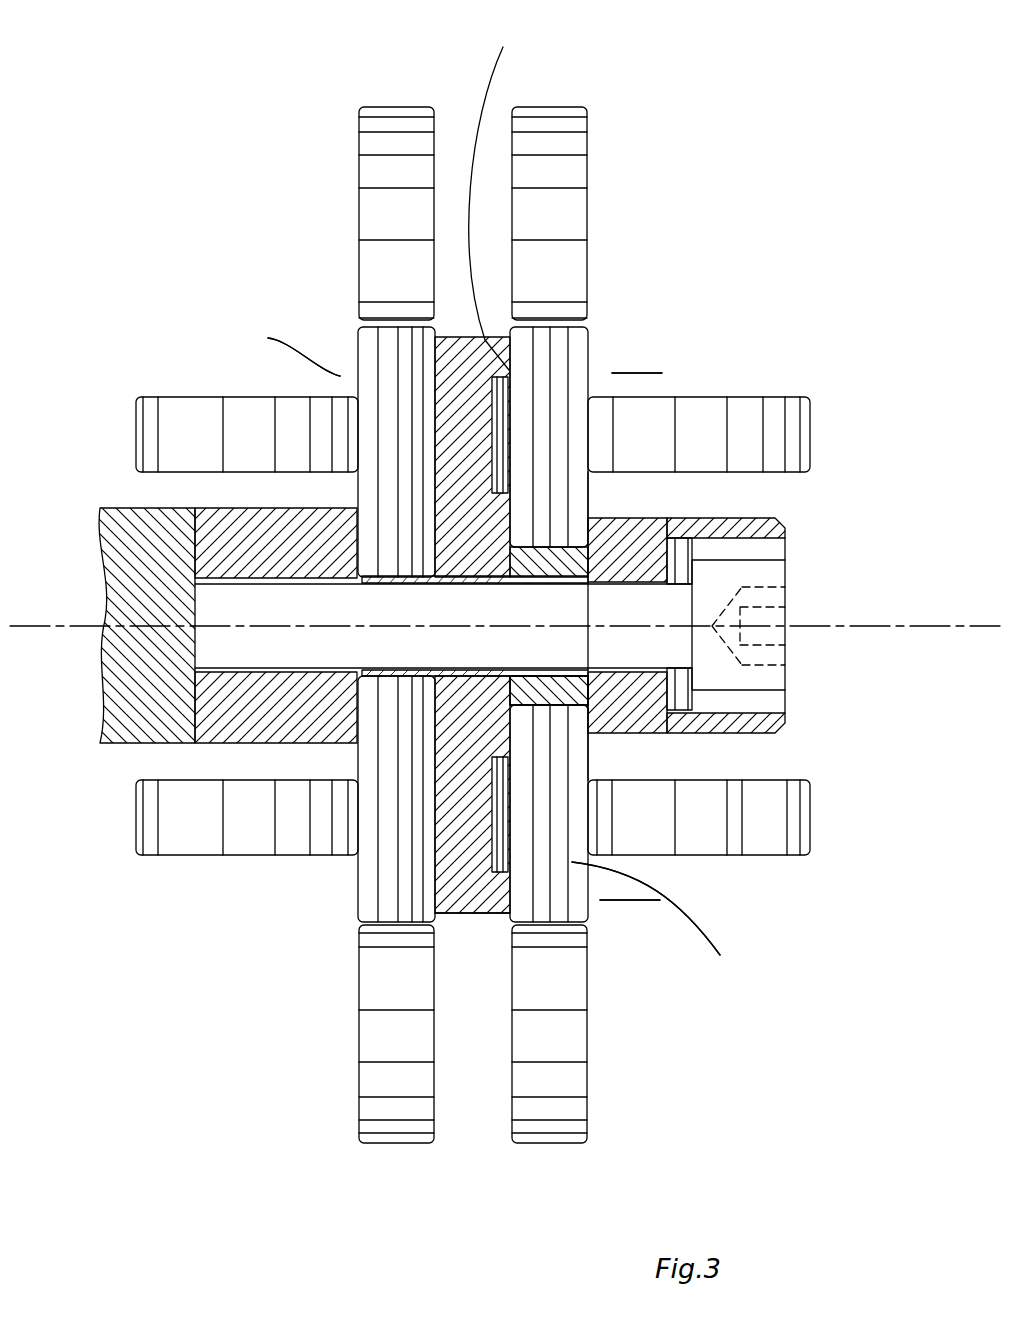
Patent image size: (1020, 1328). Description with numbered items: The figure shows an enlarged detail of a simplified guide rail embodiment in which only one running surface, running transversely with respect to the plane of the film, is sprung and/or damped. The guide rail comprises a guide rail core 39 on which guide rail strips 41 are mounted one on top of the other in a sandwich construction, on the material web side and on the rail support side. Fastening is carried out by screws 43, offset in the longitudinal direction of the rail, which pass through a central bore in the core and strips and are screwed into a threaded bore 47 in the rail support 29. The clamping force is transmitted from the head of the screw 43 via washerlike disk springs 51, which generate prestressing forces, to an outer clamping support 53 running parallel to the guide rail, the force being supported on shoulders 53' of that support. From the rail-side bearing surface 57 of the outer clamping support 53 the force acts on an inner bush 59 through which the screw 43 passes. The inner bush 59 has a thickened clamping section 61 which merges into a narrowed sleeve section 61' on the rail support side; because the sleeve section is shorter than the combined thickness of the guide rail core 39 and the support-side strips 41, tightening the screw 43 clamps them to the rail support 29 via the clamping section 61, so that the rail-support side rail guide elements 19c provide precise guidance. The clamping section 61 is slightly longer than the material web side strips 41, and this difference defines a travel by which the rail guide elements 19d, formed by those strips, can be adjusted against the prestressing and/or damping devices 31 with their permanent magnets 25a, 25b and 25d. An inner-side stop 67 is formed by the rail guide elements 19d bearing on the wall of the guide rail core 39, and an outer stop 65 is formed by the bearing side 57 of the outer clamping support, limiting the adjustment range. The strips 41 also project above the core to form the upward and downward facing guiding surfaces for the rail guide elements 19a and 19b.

The rail guide element 19a is at (662, 373).
The rail guide element 19b is at (494, 646).
The rail-support side rail guide element 19c is at (494, 646).
The material web side rail guide element 19d is at (489, 208).
The permanent magnet 25a is at (405, 137).
The permanent magnet 25b is at (405, 1112).
The permanent magnet 25d is at (180, 418).
The rail support 29 is at (152, 715).
The prestressing and/or damping device 31 is at (588, 468).
The guide rail core 39 is at (460, 393).
The guide rail strip 41 is at (590, 400).
The screw 43 is at (670, 607).
The threaded bore 47 is at (237, 668).
The disk spring 51 is at (687, 697).
The outer clamping support 53 is at (728, 613).
The shoulder 53' is at (740, 725).
The rail-side bearing surface 57 is at (577, 692).
The inner bush 59 is at (500, 678).
The thickened clamping section 61 is at (596, 527).
The sleeve section 61' is at (383, 577).
The outer stop 65 is at (549, 690).
The inner-side stop 67 is at (588, 320).